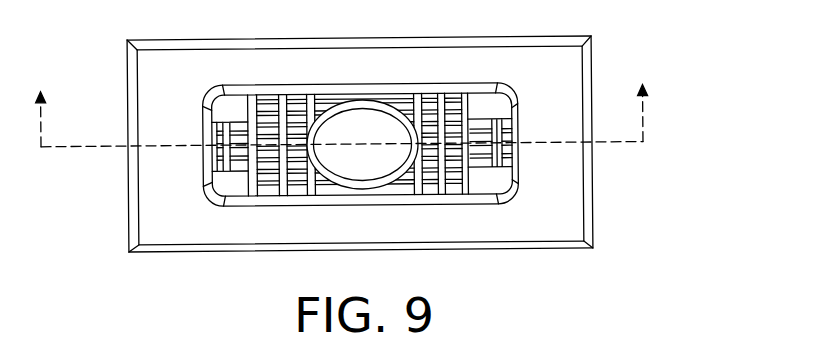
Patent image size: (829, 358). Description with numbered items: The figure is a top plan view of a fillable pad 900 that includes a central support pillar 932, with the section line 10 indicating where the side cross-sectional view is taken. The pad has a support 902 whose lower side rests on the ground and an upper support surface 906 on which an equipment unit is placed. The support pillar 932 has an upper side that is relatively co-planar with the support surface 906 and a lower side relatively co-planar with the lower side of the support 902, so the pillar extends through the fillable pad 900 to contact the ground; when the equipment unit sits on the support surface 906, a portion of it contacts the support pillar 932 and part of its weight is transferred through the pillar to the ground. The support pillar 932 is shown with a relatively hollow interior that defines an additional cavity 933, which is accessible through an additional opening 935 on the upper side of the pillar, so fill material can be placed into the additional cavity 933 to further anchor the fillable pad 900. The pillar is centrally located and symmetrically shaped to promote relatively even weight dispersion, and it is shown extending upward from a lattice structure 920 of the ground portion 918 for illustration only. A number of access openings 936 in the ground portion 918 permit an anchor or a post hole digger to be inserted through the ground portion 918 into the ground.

The fillable pad 900 is at (347, 143).
The support 902 is at (130, 193).
The support surface 906 is at (138, 63).
The ground portion 918 is at (311, 185).
The lattice structure 920 is at (255, 188).
The support pillar 932 is at (362, 185).
The additional cavity 933 is at (370, 188).
The additional opening 935 is at (376, 160).
The access opening 936 is at (487, 180).
The section line 10 is at (344, 105).